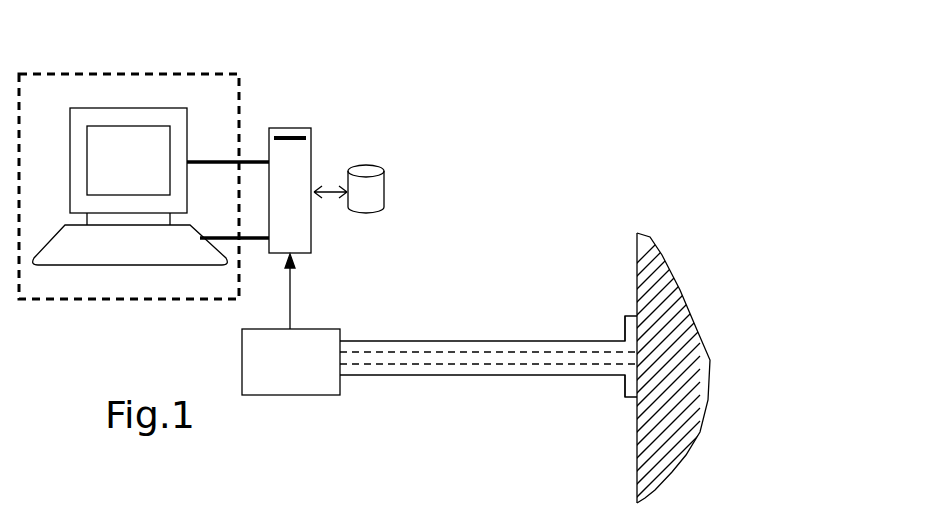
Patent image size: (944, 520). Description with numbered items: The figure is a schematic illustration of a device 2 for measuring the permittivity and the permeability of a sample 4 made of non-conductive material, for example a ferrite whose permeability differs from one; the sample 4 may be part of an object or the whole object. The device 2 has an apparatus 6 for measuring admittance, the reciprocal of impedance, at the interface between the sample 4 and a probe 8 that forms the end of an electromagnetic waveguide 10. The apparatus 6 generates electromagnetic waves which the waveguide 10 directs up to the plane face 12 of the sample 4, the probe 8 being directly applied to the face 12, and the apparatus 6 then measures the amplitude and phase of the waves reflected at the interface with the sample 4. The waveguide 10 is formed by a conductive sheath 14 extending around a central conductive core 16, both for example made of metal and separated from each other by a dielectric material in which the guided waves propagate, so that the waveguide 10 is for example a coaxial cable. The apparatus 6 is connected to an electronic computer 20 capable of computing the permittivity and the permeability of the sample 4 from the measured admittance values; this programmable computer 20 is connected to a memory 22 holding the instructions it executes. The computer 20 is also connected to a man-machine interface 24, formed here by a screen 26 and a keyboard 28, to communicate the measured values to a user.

The device 2 is at (687, 37).
The sample 4 is at (670, 255).
The apparatus 6 is at (291, 324).
The probe 8 is at (622, 325).
The electromagnetic waveguide 10 is at (637, 414).
The plane face 12 is at (637, 242).
The conductive sheath 14 is at (441, 341).
The central conductive core 16 is at (371, 357).
The electronic computer 20 is at (298, 128).
The memory 22 is at (369, 163).
The man-machine interface 24 is at (68, 303).
The screen 26 is at (128, 160).
The keyboard 28 is at (130, 239).